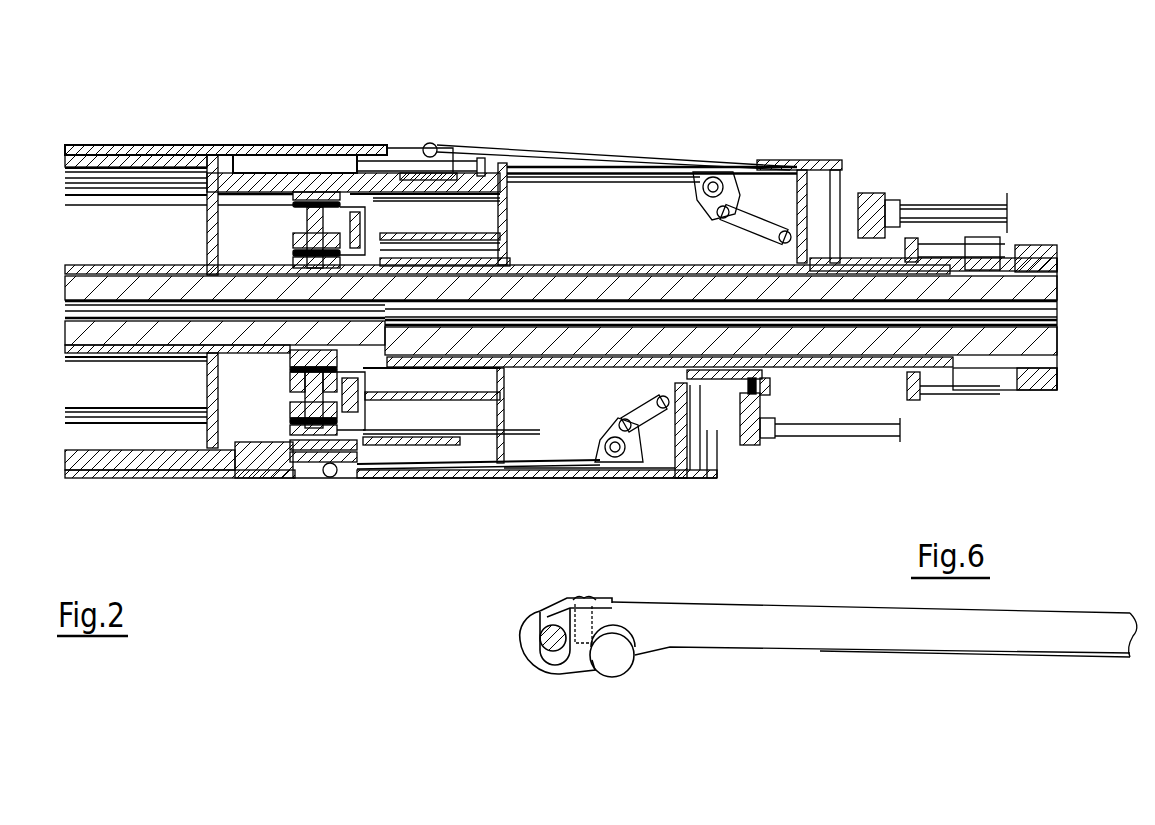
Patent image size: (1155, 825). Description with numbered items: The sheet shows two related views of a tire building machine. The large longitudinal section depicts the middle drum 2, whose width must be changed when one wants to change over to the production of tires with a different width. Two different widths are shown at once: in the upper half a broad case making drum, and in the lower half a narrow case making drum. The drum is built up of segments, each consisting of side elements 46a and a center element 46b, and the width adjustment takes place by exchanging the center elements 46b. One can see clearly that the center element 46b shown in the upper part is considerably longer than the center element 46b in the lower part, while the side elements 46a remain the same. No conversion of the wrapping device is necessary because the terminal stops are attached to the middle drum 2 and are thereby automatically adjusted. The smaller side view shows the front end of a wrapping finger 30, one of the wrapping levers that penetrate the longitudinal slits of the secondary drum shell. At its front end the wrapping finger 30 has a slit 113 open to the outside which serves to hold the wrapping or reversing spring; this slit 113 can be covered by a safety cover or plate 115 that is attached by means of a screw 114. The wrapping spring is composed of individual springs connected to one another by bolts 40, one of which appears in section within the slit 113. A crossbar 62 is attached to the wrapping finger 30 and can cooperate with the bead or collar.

In FIG. 2, the middle drum 2 is at (258, 130).
In FIG. 2, the side elements 46a is at (313, 150).
In FIG. 2, the center element 46b is at (185, 145).
In FIG. 6, the wrapping finger 30 is at (725, 650).
In FIG. 6, the bolt 40 is at (553, 651).
In FIG. 6, the crossbar 62 is at (621, 660).
In FIG. 6, the slit 113 is at (560, 617).
In FIG. 6, the screw 114 is at (592, 599).
In FIG. 6, the safety cover or plate 115 is at (575, 603).